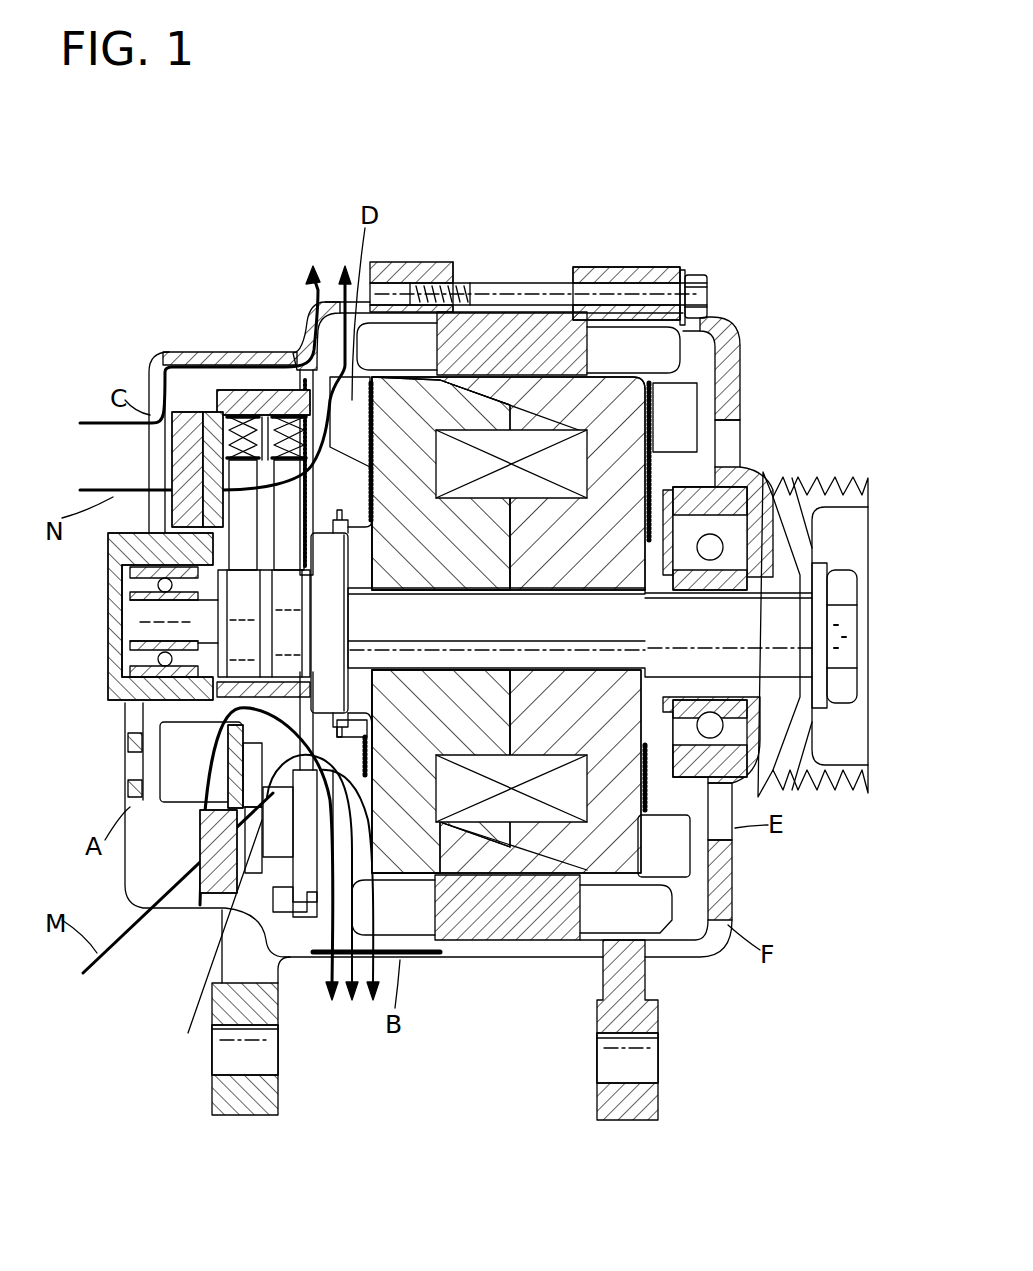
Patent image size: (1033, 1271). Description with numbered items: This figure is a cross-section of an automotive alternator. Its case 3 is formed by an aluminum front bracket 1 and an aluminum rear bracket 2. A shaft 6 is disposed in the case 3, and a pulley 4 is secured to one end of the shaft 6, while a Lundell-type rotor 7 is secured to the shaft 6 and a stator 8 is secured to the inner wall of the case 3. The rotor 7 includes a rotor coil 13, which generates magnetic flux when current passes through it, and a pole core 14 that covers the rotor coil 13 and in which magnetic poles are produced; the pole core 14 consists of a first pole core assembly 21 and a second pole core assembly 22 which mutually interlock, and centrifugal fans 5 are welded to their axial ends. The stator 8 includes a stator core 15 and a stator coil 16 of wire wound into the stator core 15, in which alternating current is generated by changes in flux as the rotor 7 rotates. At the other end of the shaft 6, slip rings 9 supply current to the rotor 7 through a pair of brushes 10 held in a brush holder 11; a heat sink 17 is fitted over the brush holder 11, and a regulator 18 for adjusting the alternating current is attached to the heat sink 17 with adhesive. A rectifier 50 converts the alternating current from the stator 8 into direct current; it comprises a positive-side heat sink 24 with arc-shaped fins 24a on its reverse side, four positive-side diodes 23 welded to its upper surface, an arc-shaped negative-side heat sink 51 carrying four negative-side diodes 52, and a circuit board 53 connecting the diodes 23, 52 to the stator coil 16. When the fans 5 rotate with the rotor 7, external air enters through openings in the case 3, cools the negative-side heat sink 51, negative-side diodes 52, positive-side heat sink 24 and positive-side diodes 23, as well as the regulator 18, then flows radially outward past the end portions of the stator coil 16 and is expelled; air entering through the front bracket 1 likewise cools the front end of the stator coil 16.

The front bracket 1 is at (723, 893).
The rear bracket 2 is at (197, 352).
The case 3 is at (328, 302).
The pulley 4 is at (867, 467).
The centrifugal fans 5 is at (367, 365).
The shaft 6 is at (800, 632).
The rotor 7 is at (760, 735).
The stator 8 is at (493, 947).
The slip rings 9 is at (123, 613).
The brushes 10 is at (243, 455).
The brush holder 11 is at (263, 415).
The rotor coil 13 is at (557, 793).
The pole core 14 is at (620, 815).
The stator core 15 is at (527, 327).
The stator coil 16 is at (620, 340).
The heat sink 17 is at (183, 453).
The regulator 18 is at (193, 420).
The first pole core assembly 21 is at (640, 853).
The second pole core assembly 22 is at (403, 793).
The positive-side diodes 23 is at (245, 757).
The positive-side heat sink 24 is at (137, 770).
The fins 24a is at (170, 737).
The rectifier 50 is at (200, 800).
The negative-side heat sink 51 is at (227, 880).
The negative-side diodes 52 is at (280, 855).
The circuit board 53 is at (283, 920).